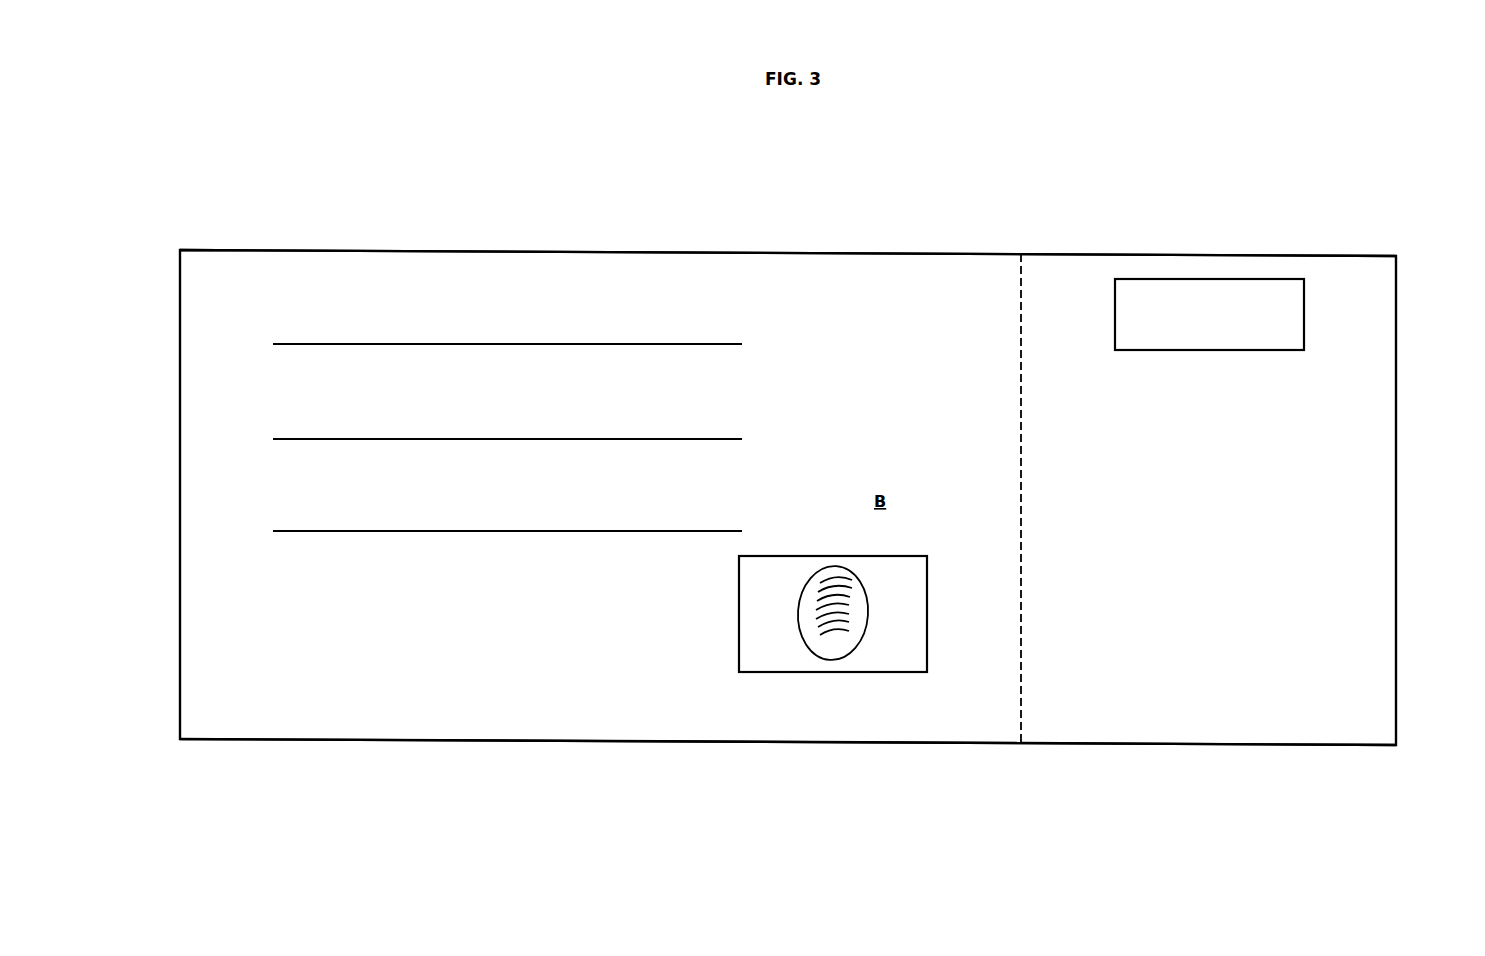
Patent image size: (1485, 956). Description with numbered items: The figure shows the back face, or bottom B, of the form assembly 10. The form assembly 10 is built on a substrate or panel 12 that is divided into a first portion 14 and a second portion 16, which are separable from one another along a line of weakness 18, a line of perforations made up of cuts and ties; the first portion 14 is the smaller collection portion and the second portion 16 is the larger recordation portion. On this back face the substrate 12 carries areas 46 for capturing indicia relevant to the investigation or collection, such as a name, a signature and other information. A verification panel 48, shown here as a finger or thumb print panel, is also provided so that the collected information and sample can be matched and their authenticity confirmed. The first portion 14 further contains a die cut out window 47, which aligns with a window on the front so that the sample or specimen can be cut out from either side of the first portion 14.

The form assembly 10 is at (1333, 247).
The substrate or panel 12 is at (693, 277).
The first portion 14 is at (1243, 722).
The second portion 16 is at (427, 717).
The line of weakness 18 is at (1019, 703).
The areas for capturing indicia 46 is at (303, 437).
The die cut out window 47 is at (1304, 316).
The verification panel 48 is at (836, 637).